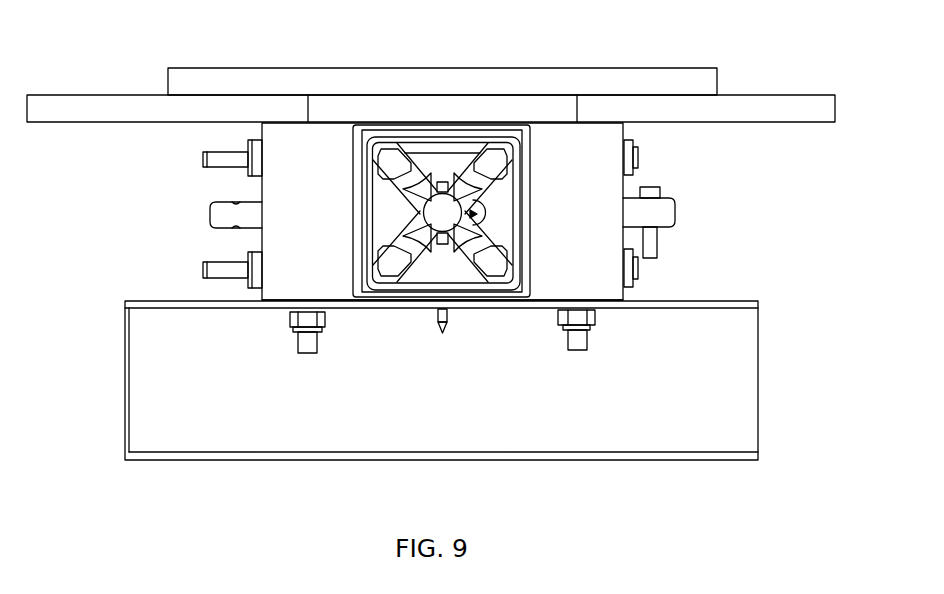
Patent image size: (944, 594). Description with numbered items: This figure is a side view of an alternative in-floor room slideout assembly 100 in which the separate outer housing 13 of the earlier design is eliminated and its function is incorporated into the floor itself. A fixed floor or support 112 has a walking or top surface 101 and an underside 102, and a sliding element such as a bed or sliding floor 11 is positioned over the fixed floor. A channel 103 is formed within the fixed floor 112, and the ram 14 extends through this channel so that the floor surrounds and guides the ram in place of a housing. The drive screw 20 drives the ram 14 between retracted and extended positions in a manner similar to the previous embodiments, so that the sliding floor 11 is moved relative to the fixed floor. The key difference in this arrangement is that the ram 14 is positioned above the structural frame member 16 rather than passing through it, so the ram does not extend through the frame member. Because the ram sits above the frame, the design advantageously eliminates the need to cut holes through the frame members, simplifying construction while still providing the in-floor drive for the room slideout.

The sliding floor 11 is at (610, 75).
The top surface 101 is at (135, 95).
The in-floor room slideout assembly 100 is at (176, 181).
The underside 102 is at (602, 300).
The outer housing 13 is at (378, 127).
The ram 14 is at (428, 137).
The drive screw 20 is at (442, 226).
The channel 103 is at (506, 216).
The fixed floor 112 is at (692, 214).
The frame member 16 is at (745, 410).